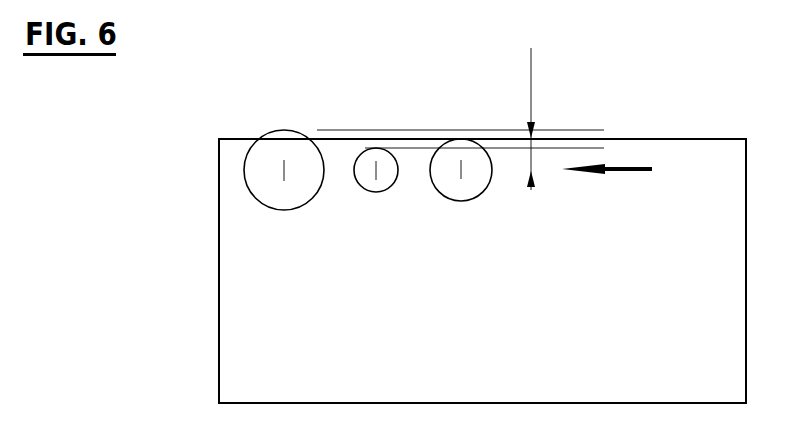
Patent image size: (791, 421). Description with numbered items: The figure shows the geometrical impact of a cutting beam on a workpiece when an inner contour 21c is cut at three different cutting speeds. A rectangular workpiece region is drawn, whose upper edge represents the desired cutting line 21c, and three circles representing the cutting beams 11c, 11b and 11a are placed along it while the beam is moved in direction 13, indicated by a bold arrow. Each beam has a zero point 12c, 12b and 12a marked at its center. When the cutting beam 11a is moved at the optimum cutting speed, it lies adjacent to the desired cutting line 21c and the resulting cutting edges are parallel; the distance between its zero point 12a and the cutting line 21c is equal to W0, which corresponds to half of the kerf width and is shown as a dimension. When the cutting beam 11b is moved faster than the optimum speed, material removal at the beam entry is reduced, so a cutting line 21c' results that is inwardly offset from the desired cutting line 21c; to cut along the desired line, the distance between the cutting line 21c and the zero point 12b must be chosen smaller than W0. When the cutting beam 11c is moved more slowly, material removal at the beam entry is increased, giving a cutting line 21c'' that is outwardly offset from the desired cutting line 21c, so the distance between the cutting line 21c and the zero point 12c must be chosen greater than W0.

The cutting beam 11a is at (471, 108).
The cutting beam 11b is at (360, 104).
The cutting beam 11c is at (249, 113).
The zero point 12a is at (426, 245).
The zero point 12b is at (345, 245).
The zero point 12c is at (261, 245).
The direction 13 is at (639, 169).
The inner contour / desired cutting line 21c is at (488, 209).
The cutting line 21c' is at (484, 82).
The cutting line 21c'' is at (424, 73).
The distance W0 is at (547, 103).